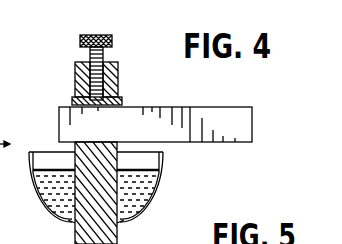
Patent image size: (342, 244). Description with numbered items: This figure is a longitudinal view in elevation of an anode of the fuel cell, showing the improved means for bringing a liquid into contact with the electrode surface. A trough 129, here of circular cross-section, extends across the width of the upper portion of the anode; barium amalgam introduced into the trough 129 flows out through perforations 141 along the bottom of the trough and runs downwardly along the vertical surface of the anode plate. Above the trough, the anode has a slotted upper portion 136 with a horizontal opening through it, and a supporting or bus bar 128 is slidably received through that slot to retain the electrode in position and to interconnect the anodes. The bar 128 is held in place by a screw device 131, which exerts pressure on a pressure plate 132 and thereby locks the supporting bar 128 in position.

The supporting bar 128 is at (220, 97).
The trough 129 is at (163, 172).
The screw device 131 is at (82, 40).
The pressure plate 132 is at (73, 102).
The upper portion 136 is at (118, 72).
The perforations 141 is at (72, 222).